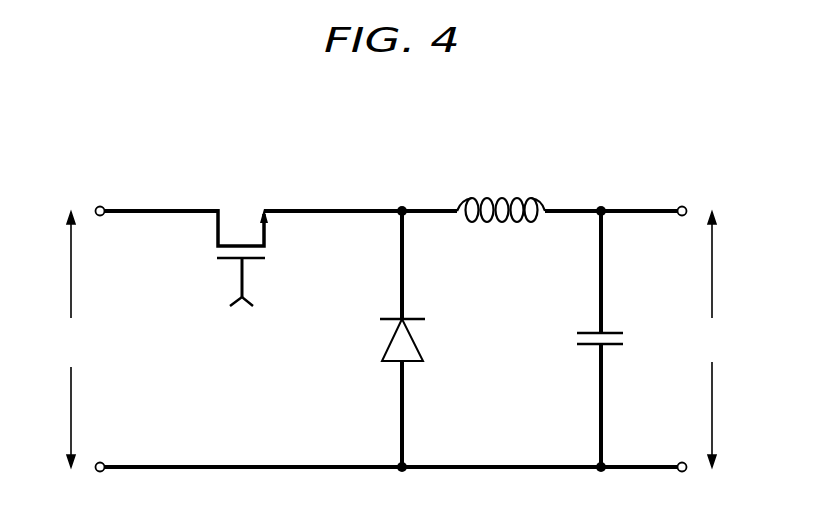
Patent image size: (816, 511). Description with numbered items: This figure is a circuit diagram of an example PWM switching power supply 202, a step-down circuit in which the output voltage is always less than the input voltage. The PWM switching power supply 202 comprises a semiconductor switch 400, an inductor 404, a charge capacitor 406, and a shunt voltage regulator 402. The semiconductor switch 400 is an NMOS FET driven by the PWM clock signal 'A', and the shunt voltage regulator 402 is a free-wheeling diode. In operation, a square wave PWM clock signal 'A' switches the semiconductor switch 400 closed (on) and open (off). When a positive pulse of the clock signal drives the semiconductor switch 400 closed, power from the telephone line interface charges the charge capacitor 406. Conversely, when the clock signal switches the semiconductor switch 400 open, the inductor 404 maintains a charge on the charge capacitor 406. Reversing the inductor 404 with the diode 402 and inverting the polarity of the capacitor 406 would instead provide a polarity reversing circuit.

The PWM switching power supply 202 is at (373, 131).
The semiconductor switch 400 is at (265, 233).
The shunt voltage regulator 402 is at (417, 341).
The inductor 404 is at (513, 222).
The charge capacitor 406 is at (617, 332).